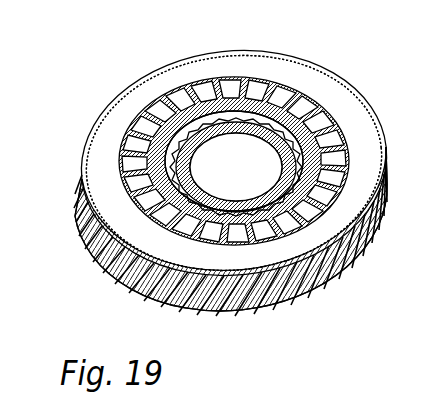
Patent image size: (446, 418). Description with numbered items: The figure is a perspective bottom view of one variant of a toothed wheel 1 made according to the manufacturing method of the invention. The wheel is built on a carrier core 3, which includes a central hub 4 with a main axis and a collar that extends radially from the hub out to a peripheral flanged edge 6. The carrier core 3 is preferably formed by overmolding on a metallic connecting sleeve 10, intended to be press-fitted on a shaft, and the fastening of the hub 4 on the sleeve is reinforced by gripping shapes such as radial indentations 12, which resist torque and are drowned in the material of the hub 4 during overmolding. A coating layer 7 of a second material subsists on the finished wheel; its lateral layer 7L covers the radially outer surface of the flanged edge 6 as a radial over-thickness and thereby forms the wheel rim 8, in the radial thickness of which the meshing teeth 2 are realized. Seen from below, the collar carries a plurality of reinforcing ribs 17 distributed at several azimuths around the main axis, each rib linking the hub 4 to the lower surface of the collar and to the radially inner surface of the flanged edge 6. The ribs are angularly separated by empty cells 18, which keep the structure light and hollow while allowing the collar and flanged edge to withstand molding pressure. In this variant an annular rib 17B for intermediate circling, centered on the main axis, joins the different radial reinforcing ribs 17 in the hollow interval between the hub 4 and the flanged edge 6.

The toothed wheel 1 is at (87, 276).
The meshing teeth 2 is at (147, 297).
The carrier core 3 is at (117, 155).
The hub 4 is at (256, 123).
The peripheral flanged edge 6 is at (235, 88).
The coating layer 7 is at (195, 72).
The lateral layer 7L is at (123, 108).
The wheel rim 8 is at (234, 163).
The metallic connecting sleeve 10 is at (198, 165).
The radial indentations 12 is at (280, 140).
The reinforcing ribs 17 is at (323, 127).
The annular rib 17B is at (300, 110).
The empty cells 18 is at (190, 80).